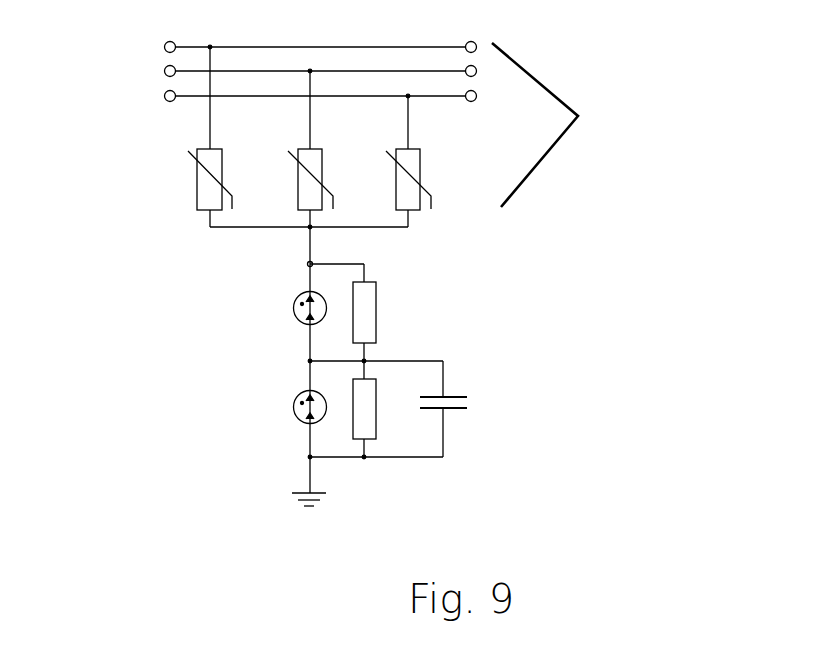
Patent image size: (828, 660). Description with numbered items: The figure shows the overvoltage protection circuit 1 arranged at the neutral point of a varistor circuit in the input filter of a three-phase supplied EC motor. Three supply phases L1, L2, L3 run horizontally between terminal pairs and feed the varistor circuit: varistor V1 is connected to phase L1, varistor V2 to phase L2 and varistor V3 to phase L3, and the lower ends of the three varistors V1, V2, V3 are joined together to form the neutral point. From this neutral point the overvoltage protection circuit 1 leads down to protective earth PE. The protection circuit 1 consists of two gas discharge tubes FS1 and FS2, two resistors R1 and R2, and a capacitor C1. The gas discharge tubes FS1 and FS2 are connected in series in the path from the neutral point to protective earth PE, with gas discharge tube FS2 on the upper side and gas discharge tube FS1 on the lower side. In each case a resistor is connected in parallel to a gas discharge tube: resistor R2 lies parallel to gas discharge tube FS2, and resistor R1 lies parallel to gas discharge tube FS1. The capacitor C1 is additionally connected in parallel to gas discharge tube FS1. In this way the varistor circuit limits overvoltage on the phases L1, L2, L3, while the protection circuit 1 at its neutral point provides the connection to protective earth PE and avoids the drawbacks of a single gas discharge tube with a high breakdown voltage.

The overvoltage protection circuit 1 is at (141, 264).
The phase line L1 is at (306, 48).
The phase line L2 is at (306, 72).
The phase line L3 is at (306, 97).
The varistor V1 is at (221, 136).
The varistor V2 is at (321, 148).
The varistor V3 is at (419, 160).
The gas discharge tube FS1 is at (292, 392).
The gas discharge tube FS2 is at (292, 305).
The resistor R1 is at (380, 409).
The resistor R2 is at (359, 312).
The capacitor C1 is at (459, 409).
The protective earth PE is at (295, 490).